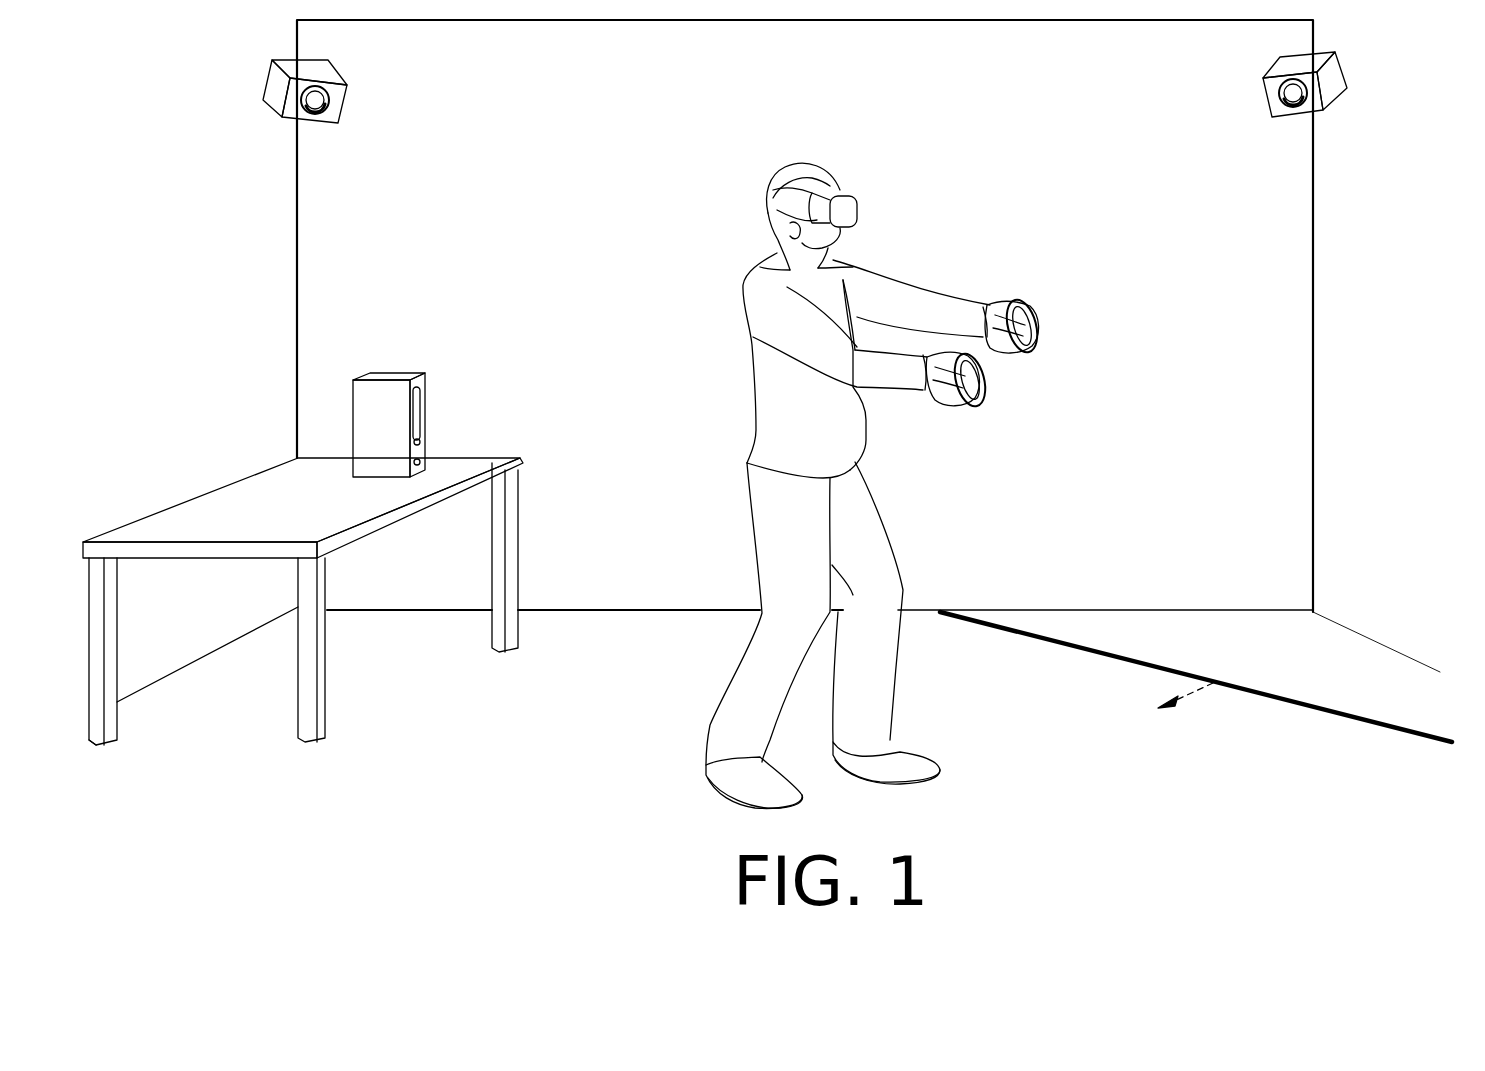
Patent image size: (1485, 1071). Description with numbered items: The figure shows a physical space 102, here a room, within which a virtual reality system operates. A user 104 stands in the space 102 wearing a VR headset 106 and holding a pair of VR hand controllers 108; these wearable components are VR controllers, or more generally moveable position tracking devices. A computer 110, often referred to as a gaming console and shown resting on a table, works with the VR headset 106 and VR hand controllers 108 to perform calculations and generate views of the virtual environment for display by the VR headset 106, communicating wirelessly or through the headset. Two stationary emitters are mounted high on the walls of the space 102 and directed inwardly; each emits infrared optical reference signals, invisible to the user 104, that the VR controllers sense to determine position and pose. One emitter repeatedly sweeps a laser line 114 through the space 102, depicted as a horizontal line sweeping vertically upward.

The physical space 102 is at (160, 132).
The user 104 is at (757, 304).
The VR headset 106 is at (857, 208).
The VR hand controllers 108 is at (1045, 330).
The computer 110 is at (425, 387).
The laser line 114 is at (1063, 647).